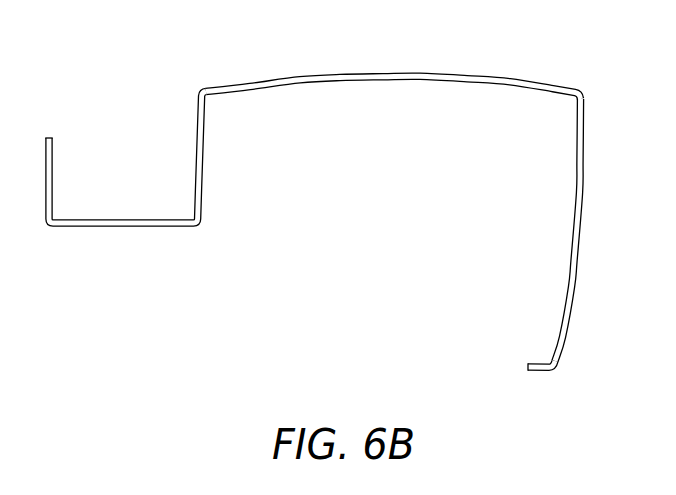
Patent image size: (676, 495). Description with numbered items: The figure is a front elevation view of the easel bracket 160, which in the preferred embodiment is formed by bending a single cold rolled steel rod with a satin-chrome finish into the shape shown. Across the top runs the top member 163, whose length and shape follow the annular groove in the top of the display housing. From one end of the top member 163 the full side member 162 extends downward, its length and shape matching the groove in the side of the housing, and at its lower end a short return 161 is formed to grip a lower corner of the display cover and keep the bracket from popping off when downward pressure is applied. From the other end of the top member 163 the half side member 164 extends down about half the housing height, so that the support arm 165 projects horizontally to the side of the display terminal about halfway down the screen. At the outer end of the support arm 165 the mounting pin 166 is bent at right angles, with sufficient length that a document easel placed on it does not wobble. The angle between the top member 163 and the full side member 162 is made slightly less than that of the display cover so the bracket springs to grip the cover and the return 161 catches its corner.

The easel bracket 160 is at (512, 77).
The return 161 is at (538, 362).
The full side member 162 is at (574, 210).
The top member 163 is at (384, 73).
The half side member 164 is at (203, 165).
The support arm 165 is at (118, 227).
The mounting pin 166 is at (53, 164).